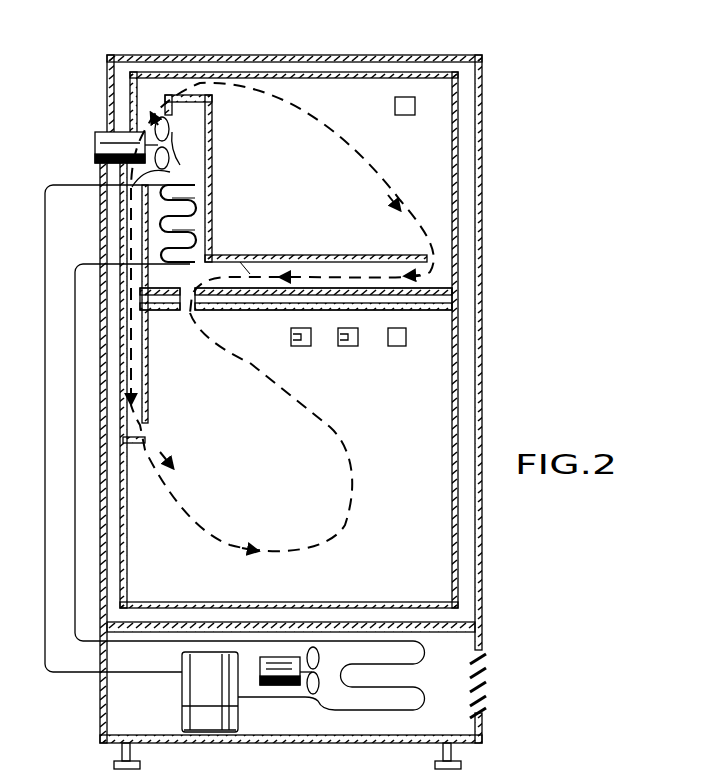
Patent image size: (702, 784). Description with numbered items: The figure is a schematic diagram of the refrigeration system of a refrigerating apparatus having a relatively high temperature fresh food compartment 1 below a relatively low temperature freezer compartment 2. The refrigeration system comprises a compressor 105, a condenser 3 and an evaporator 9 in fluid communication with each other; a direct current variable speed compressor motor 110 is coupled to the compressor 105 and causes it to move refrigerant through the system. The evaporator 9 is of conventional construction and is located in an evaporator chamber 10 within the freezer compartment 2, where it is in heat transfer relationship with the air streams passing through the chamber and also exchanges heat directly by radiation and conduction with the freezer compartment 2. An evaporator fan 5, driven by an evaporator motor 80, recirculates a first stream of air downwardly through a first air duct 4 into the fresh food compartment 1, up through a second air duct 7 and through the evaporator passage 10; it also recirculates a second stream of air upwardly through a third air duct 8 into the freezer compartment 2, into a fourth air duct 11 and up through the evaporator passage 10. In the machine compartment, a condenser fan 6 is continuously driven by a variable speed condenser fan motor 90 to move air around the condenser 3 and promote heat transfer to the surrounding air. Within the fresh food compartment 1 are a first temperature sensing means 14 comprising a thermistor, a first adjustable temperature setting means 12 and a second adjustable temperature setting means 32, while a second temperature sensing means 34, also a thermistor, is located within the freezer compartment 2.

The fresh food compartment 1 is at (294, 460).
The freezer compartment 2 is at (320, 205).
The condenser 3 is at (415, 710).
The first air duct 4 is at (152, 387).
The evaporator fan 5 is at (168, 133).
The condenser fan 6 is at (313, 691).
The second air duct 7 is at (178, 268).
The third air duct 8 is at (178, 86).
The evaporator 9 is at (197, 196).
The evaporator chamber 10 is at (203, 213).
The fourth air duct 11 is at (262, 269).
The first adjustable temperature setting means 12 is at (346, 347).
The first temperature sensing means 14 is at (396, 347).
The second adjustable temperature setting means 32 is at (292, 347).
The second temperature sensing means 34 is at (405, 116).
The evaporator motor 80 is at (100, 133).
The variable speed condenser fan motor 90 is at (280, 673).
The compressor 105 is at (181, 681).
The direct current variable speed compressor motor 110 is at (208, 733).